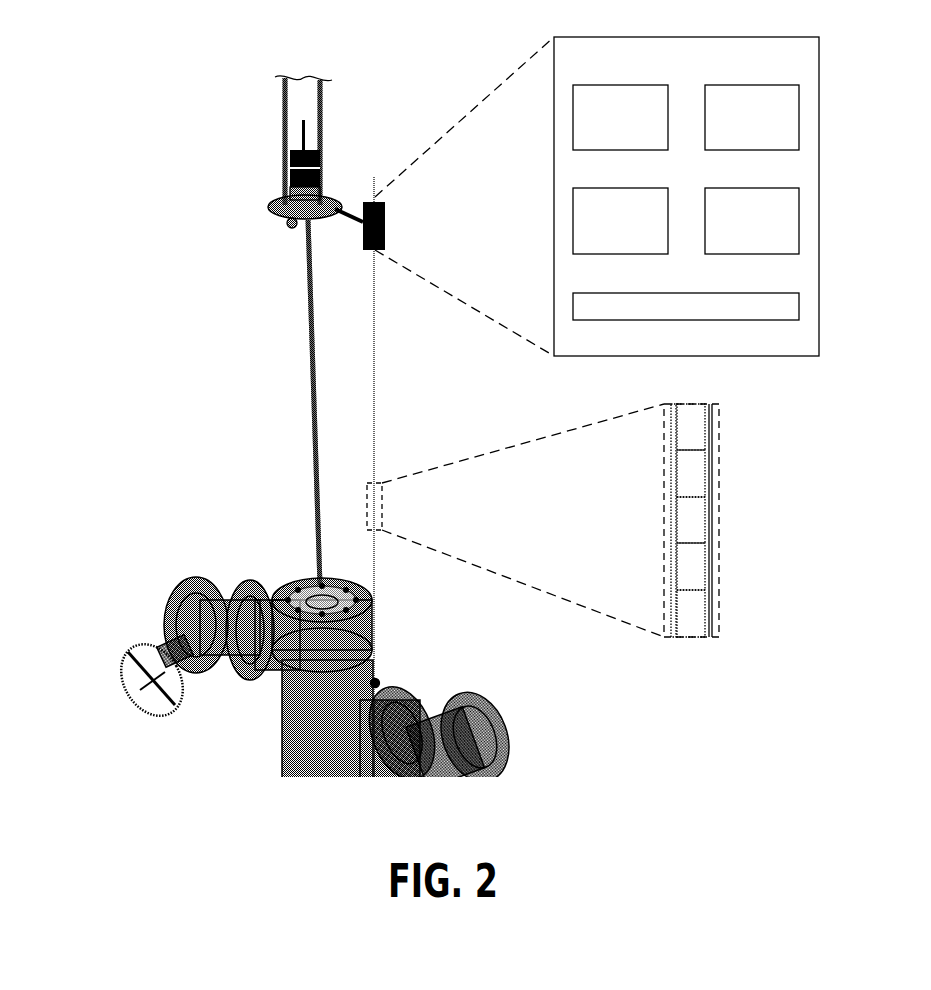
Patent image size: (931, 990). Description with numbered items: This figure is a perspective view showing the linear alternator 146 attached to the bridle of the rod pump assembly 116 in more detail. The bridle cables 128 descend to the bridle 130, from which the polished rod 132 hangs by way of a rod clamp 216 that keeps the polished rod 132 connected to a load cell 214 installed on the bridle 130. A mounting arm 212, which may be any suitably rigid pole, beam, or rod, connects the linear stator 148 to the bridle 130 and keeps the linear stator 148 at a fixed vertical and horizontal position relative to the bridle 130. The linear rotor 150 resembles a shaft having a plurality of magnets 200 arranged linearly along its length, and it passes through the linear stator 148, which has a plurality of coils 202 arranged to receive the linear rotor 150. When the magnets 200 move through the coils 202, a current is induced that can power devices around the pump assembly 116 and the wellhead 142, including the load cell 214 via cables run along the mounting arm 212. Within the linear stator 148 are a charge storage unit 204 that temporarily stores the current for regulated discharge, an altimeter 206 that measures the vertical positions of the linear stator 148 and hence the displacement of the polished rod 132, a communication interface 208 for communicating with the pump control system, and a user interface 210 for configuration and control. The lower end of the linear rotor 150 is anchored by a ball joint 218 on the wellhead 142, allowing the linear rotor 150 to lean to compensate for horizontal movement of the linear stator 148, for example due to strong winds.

The rod pump assembly 116 is at (98, 149).
The bridle cables 128 is at (283, 100).
The bridle 130 is at (272, 214).
The polished rod 132 is at (306, 399).
The wellhead 142 is at (136, 618).
The linear alternator 146 is at (401, 98).
The linear stator 148 is at (386, 220).
The linear rotor 150 is at (378, 512).
The magnets 200 is at (702, 468).
The coils 202 is at (686, 322).
The charge storage unit 204 is at (650, 256).
The altimeter 206 is at (782, 256).
The communication interface 208 is at (650, 153).
The user interface 210 is at (782, 153).
The mounting arm 212 is at (352, 228).
The load cell 214 is at (290, 196).
The rod clamp 216 is at (322, 160).
The ball joint 218 is at (382, 681).